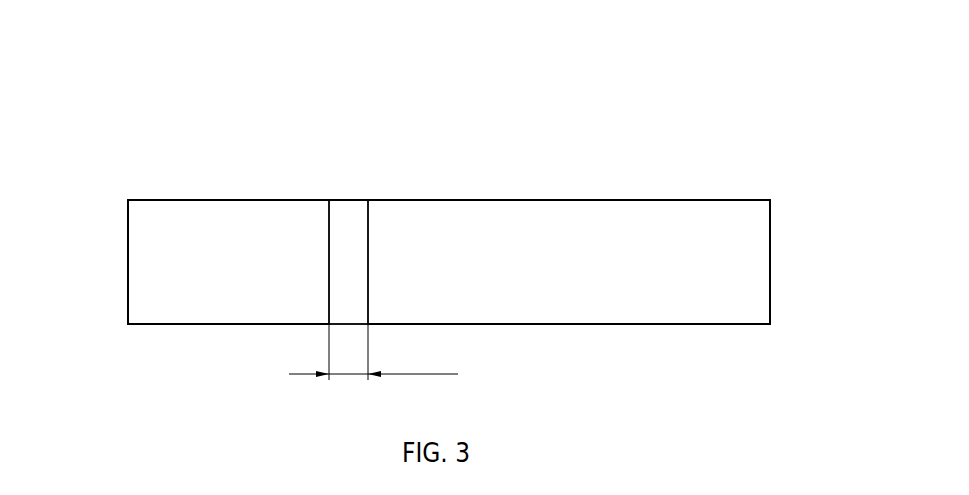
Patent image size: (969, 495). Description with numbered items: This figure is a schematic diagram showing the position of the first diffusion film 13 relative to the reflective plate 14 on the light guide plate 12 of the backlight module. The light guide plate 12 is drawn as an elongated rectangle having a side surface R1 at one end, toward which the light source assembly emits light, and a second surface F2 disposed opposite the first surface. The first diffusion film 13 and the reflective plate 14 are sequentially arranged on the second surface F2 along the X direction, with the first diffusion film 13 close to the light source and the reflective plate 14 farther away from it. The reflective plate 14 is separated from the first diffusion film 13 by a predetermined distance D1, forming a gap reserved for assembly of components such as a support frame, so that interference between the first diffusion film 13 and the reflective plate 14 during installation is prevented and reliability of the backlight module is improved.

The light guide plate 12 is at (770, 260).
The first diffusion film 13 is at (223, 285).
The reflective plate 14 is at (530, 285).
The predetermined distance D1 is at (373, 352).
The side surface R1 is at (127, 260).
The second surface F2 is at (397, 230).